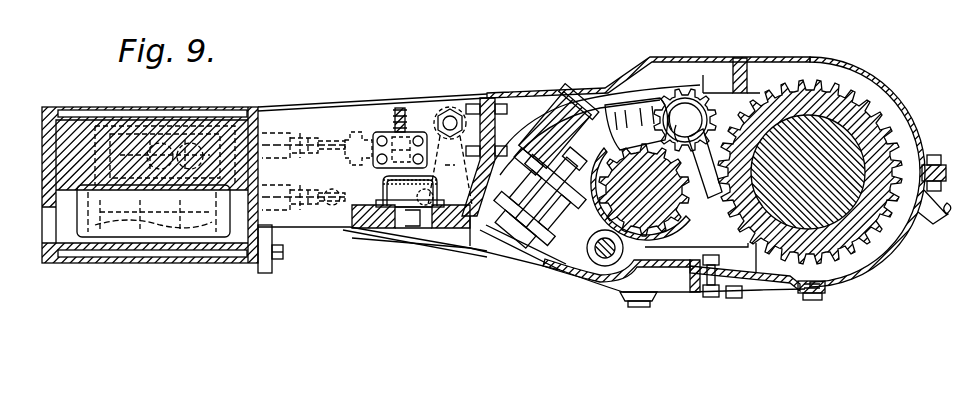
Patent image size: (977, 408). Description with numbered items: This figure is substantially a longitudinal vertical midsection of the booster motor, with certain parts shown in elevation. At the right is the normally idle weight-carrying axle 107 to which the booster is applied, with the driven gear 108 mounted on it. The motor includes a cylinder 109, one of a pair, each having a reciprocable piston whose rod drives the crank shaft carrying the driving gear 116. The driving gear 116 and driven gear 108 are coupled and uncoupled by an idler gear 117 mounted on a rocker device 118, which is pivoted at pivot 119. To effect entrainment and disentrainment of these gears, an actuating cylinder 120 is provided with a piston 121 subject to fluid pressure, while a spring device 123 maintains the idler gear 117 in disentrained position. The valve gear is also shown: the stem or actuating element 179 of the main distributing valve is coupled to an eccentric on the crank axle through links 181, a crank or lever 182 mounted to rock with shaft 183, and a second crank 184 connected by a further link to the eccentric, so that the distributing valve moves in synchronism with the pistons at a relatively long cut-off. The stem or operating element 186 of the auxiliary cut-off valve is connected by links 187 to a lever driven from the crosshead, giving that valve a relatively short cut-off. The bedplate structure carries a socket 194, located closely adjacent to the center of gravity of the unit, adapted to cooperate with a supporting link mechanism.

The axle 107 is at (900, 142).
The driven gear 108 is at (813, 87).
The cylinder 109 is at (43, 263).
The driving gear 116 is at (665, 212).
The idler gear 117 is at (685, 105).
The rocker device 118 is at (583, 135).
The pivot 119 is at (650, 280).
The actuating cylinder 120 is at (600, 257).
The piston 121 is at (543, 247).
The spring device 123 is at (498, 218).
The stem or actuating element 179 is at (282, 220).
The links 181 is at (357, 200).
The crank or lever 182 is at (432, 140).
The shaft 183 is at (456, 107).
The second crank 184 is at (440, 210).
The stem or operating element 186 is at (328, 143).
The links 187 is at (358, 132).
The socket 194 is at (389, 217).